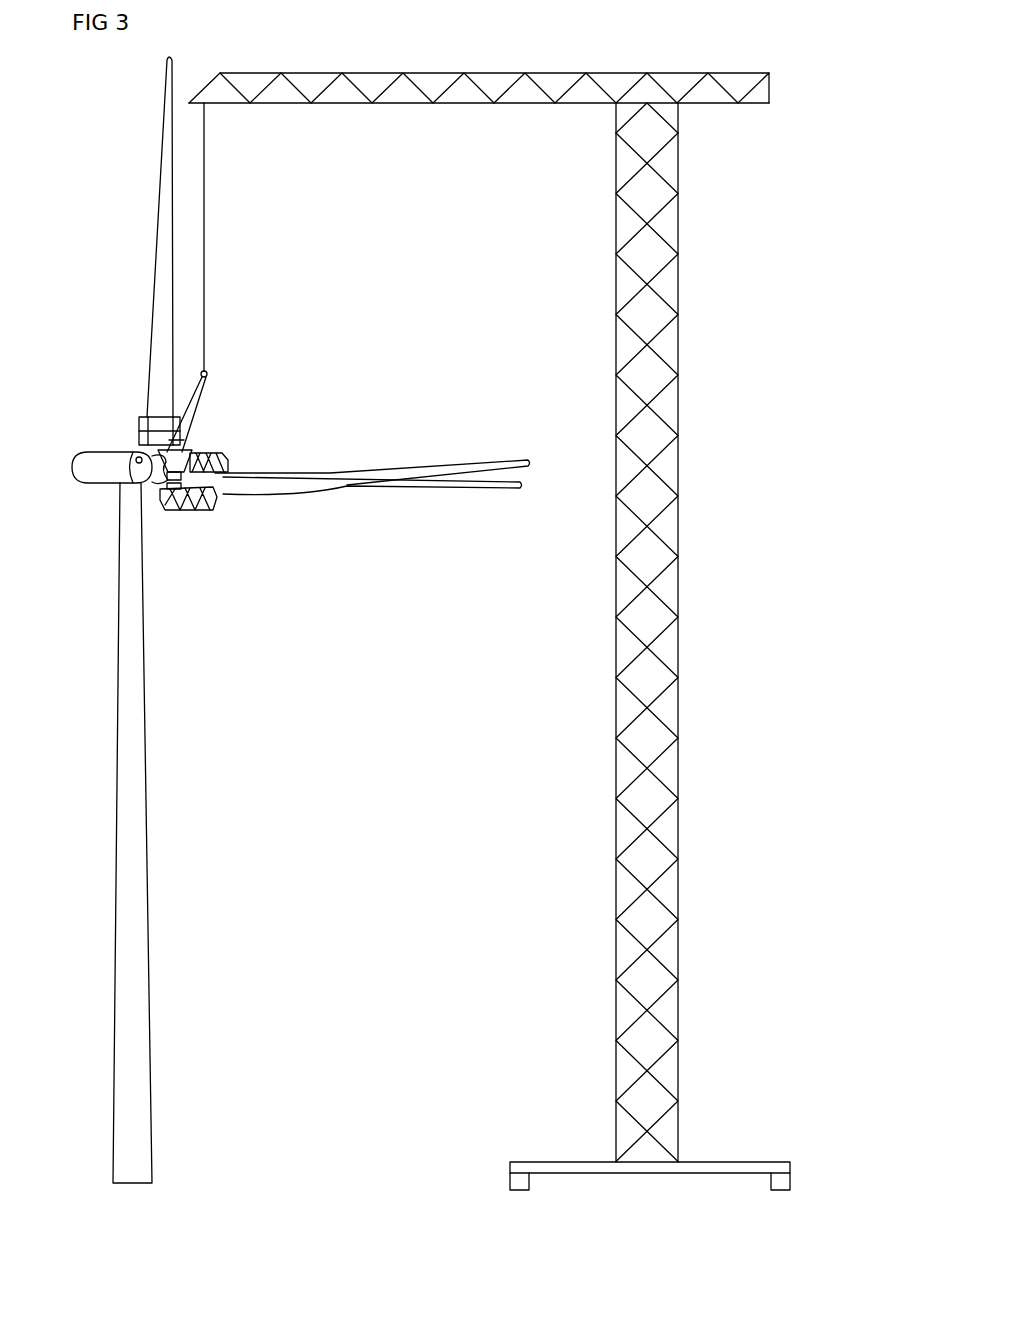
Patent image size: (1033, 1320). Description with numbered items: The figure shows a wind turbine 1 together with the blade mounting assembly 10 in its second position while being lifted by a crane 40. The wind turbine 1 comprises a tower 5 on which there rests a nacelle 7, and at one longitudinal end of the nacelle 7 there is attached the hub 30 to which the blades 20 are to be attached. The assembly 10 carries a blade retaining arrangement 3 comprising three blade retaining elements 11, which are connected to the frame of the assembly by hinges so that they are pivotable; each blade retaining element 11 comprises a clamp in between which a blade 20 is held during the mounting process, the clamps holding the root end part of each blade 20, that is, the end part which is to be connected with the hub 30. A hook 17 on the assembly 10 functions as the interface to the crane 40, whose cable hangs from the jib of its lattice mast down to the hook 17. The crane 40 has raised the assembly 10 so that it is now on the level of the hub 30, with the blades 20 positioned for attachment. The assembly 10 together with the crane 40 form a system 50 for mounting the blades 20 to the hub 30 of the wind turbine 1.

The wind turbine 1 is at (301, 620).
The blade retaining arrangement 3 is at (190, 540).
The tower 5 is at (138, 955).
The nacelle 7 is at (104, 450).
The assembly 10 is at (211, 545).
The blade retaining element 11 is at (142, 415).
The hook 17 is at (208, 378).
The blade 20 is at (158, 262).
The hub 30 is at (150, 518).
The crane 40 is at (570, 661).
The system 50 is at (489, 596).